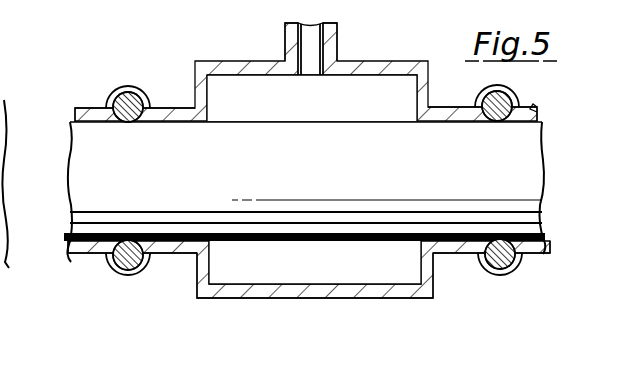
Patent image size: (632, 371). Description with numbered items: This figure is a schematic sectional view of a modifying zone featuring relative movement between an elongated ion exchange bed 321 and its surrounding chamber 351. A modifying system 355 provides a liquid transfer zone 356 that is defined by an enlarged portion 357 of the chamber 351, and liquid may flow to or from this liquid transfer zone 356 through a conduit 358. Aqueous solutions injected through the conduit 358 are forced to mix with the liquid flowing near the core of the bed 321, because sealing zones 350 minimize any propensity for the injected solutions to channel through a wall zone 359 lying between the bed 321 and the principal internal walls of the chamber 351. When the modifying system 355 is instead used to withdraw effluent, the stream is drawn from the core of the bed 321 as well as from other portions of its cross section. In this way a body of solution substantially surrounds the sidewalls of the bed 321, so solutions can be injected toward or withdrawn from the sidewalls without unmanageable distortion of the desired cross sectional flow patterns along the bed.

The ion exchange bed 321 is at (304, 192).
The sealing zones 350 is at (124, 280).
The chamber 351 is at (534, 106).
The modifying system 355 is at (210, 316).
The liquid transfer zone 356 is at (395, 78).
The enlarged portion 357 is at (196, 77).
The conduit 358 is at (289, 36).
The wall zone 359 is at (80, 122).